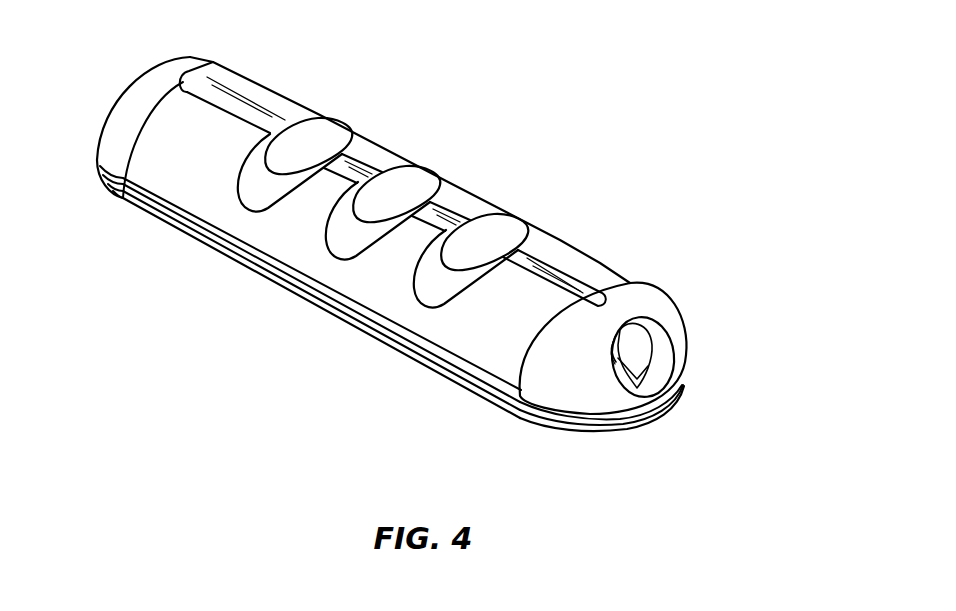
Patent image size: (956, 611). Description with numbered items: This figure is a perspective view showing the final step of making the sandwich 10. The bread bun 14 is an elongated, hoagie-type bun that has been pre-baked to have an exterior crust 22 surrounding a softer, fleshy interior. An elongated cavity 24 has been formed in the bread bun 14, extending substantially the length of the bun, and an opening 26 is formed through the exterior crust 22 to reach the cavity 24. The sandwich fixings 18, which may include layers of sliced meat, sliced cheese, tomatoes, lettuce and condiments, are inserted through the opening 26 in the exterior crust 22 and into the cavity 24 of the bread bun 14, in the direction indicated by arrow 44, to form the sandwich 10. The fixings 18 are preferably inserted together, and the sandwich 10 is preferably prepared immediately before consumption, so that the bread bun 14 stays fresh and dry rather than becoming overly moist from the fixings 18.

The sandwich 10 is at (452, 136).
The bread bun 14 is at (557, 237).
The sandwich fixings 18 is at (637, 332).
The exterior crust 22 is at (490, 320).
The cavity 24 is at (663, 348).
The opening 26 is at (680, 366).
The arrow 44 is at (703, 408).